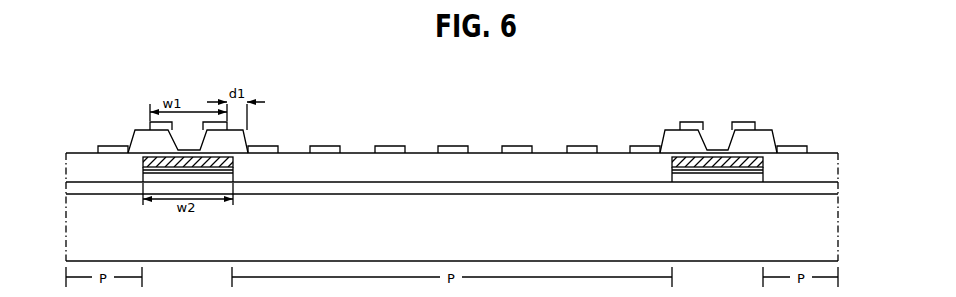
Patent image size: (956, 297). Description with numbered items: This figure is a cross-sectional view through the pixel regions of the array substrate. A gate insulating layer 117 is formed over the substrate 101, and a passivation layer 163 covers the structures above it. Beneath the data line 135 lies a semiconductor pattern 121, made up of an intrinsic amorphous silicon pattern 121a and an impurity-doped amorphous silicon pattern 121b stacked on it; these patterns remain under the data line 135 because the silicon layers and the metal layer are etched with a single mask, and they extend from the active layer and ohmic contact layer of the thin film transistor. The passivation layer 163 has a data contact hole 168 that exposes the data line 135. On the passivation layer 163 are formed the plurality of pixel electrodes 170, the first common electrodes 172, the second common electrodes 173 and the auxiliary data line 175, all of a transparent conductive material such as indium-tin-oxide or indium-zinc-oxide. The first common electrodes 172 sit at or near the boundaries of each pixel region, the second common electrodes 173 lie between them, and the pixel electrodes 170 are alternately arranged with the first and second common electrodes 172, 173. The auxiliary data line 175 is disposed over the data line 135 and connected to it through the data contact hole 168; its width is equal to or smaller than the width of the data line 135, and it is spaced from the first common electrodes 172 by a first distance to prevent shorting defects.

The substrate 101 is at (822, 232).
The gate insulating layer 117 is at (390, 190).
The semiconductor pattern 121 is at (453, 207).
The intrinsic amorphous silicon pattern 121a is at (233, 176).
The impurity-doped amorphous silicon pattern 121b is at (233, 169).
The data line 135 is at (233, 160).
The passivation layer 163 is at (467, 176).
The data contact hole 168 is at (188, 115).
The pixel electrodes 170 is at (325, 146).
The first common electrodes 172 is at (110, 146).
The second common electrodes 173 is at (388, 146).
The auxiliary data line 175 is at (200, 121).